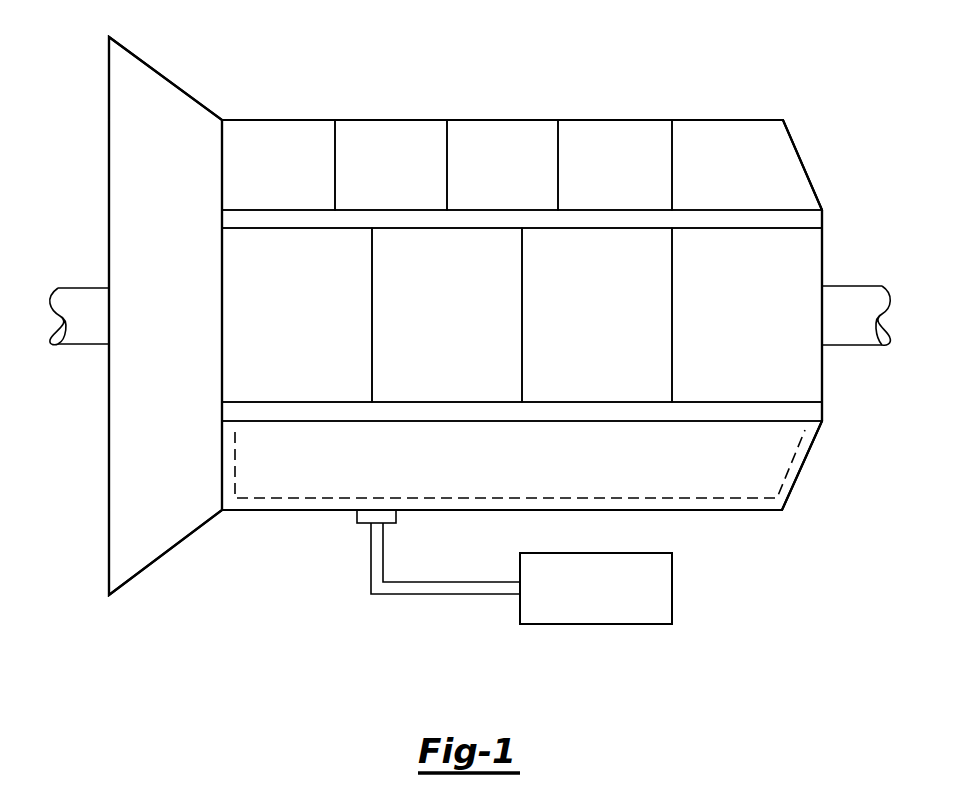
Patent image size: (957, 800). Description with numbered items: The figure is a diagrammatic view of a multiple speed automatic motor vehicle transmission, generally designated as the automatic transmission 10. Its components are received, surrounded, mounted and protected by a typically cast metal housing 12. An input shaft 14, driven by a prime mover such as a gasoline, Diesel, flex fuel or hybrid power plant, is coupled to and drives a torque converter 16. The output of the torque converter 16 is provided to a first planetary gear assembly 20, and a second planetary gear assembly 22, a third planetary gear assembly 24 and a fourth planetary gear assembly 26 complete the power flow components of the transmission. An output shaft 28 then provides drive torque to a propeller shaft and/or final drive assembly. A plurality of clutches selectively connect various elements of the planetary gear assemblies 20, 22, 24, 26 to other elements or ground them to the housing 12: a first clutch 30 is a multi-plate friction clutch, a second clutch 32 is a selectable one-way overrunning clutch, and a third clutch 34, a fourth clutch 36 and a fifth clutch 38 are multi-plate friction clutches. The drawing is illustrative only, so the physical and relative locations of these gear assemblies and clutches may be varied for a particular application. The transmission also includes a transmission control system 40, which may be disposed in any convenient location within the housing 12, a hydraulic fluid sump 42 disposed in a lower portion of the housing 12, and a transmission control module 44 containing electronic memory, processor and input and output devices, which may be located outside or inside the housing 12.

The automatic transmission 10 is at (652, 50).
The housing 12 is at (803, 162).
The input shaft 14 is at (80, 298).
The torque converter 16 is at (153, 330).
The first planetary gear assembly 20 is at (286, 328).
The second planetary gear assembly 22 is at (437, 328).
The third planetary gear assembly 24 is at (587, 328).
The fourth planetary gear assembly 26 is at (737, 328).
The output shaft 28 is at (855, 332).
The first clutch 30 is at (267, 180).
The second clutch 32 is at (379, 180).
The third clutch 34 is at (491, 180).
The fourth clutch 36 is at (603, 180).
The fifth clutch 38 is at (717, 180).
The transmission control system 40 is at (513, 472).
The hydraulic fluid sump 42 is at (745, 498).
The transmission control module 44 is at (587, 603).